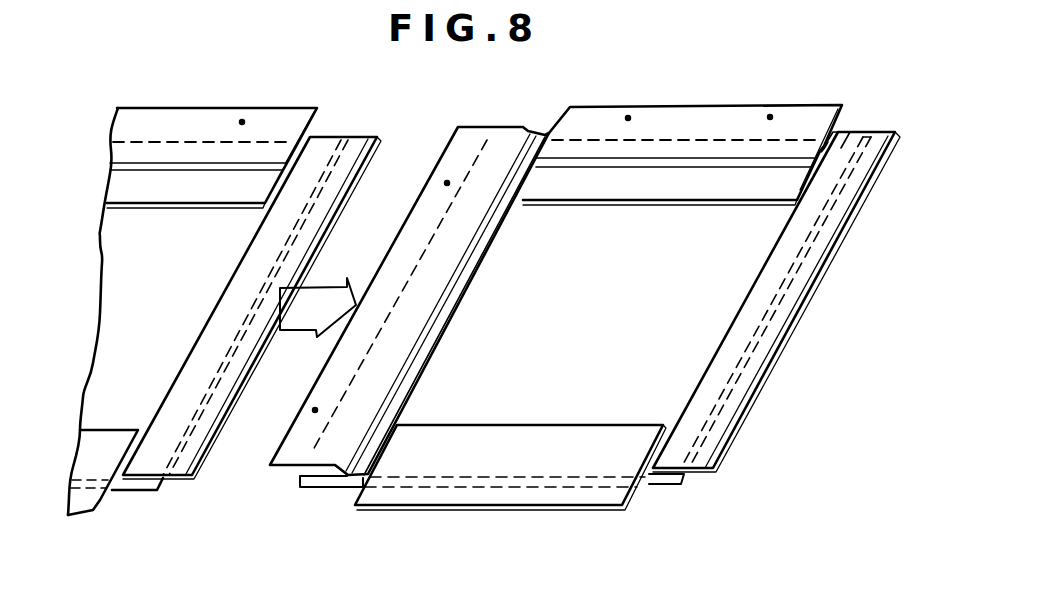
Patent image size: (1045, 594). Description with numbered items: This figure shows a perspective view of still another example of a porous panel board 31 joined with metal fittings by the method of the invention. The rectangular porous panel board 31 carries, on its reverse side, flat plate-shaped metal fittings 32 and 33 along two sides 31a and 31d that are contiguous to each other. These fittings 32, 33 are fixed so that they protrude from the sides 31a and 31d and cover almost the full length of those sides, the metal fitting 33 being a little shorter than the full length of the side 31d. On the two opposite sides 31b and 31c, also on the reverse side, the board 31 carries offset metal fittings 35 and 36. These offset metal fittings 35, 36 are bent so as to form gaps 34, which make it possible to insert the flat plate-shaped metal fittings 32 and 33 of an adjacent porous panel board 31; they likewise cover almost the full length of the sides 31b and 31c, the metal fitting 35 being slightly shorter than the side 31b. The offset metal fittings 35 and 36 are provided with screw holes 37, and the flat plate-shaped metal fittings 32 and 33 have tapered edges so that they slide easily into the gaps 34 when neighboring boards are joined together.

The porous panel board 31 is at (130, 250).
The side of porous panel board 31a is at (782, 303).
The side of porous panel board 31b is at (850, 136).
The side of porous panel board 31c is at (298, 480).
The side of porous panel board 31d is at (668, 482).
The flat plate-shaped metal fitting 32 is at (353, 137).
The flat plate-shaped metal fitting 33 is at (93, 500).
The gap 34 is at (825, 155).
The offset metal fitting 35 is at (183, 123).
The offset metal fitting 36 is at (458, 147).
The screw hole 37 is at (242, 122).